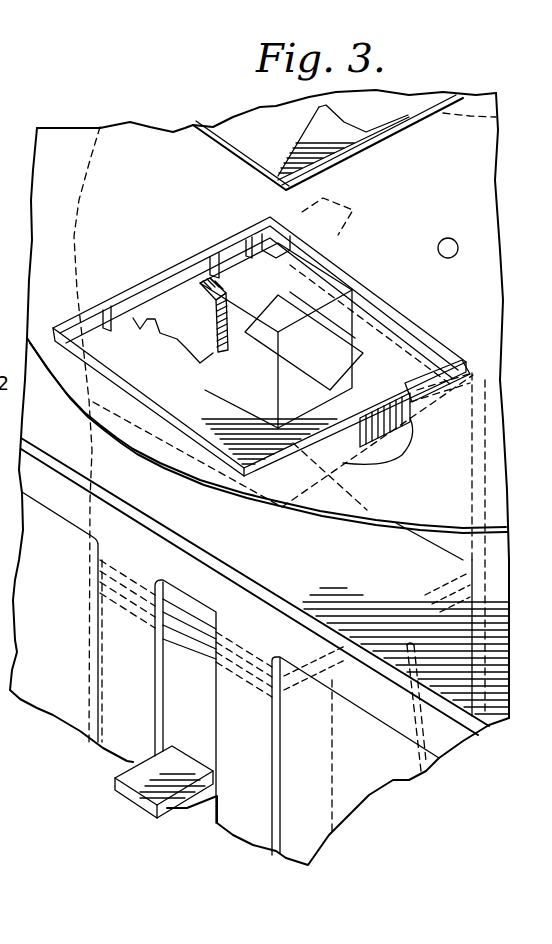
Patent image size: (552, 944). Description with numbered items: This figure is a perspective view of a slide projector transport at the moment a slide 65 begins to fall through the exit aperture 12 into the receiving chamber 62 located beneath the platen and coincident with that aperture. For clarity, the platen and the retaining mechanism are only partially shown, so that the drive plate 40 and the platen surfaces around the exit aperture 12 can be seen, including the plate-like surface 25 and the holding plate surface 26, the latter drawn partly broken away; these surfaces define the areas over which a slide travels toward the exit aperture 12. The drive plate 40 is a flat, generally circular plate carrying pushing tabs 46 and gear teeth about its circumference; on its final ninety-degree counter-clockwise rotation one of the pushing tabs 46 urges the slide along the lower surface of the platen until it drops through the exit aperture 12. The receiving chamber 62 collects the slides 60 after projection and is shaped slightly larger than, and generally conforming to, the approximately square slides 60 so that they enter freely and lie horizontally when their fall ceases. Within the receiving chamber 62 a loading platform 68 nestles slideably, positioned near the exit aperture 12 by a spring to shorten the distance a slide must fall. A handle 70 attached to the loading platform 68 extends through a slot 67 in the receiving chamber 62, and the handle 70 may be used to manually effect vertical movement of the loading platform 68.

The drive plate 40 is at (164, 128).
The plate-like surface 25 is at (348, 125).
The slide 65 is at (214, 275).
The holding plate surface 26 is at (95, 345).
The pushing tabs 46 is at (128, 313).
The exit aperture 12 is at (412, 431).
The receiving chamber 62 is at (487, 484).
The slides 60 is at (100, 578).
The slot 67 is at (155, 676).
The handle 70 is at (137, 796).
The loading platform 68 is at (391, 776).